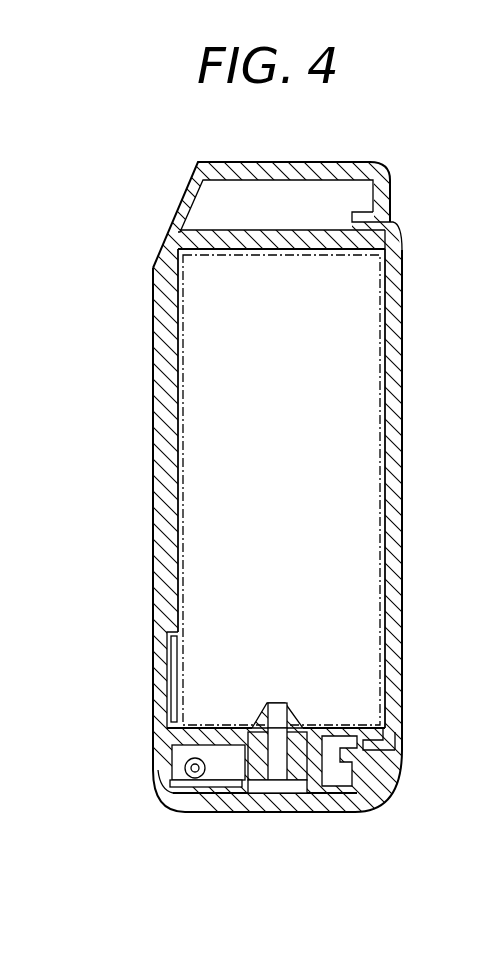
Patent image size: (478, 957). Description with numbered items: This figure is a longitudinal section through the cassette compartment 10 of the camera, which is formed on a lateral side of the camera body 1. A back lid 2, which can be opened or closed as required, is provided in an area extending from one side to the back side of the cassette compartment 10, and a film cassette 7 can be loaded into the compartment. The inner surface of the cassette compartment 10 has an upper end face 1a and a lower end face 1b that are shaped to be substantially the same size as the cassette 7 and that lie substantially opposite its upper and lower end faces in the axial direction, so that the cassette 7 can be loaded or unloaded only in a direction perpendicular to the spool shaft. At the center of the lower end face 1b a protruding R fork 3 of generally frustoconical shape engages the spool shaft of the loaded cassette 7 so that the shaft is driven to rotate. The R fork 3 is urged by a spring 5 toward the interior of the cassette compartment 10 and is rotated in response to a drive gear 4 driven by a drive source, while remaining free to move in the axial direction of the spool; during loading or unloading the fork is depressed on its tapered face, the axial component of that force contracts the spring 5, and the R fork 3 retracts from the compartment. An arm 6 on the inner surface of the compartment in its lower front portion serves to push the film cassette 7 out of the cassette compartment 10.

The camera body 1 is at (183, 178).
The upper end face 1a is at (283, 250).
The lower end face 1b is at (340, 727).
The back lid 2 is at (392, 387).
The R fork 3 is at (290, 710).
The drive gear 4 is at (202, 813).
The spring 5 is at (308, 813).
The arm 6 is at (167, 717).
The film cassette 7 is at (330, 578).
The cassette compartment 10 is at (345, 318).